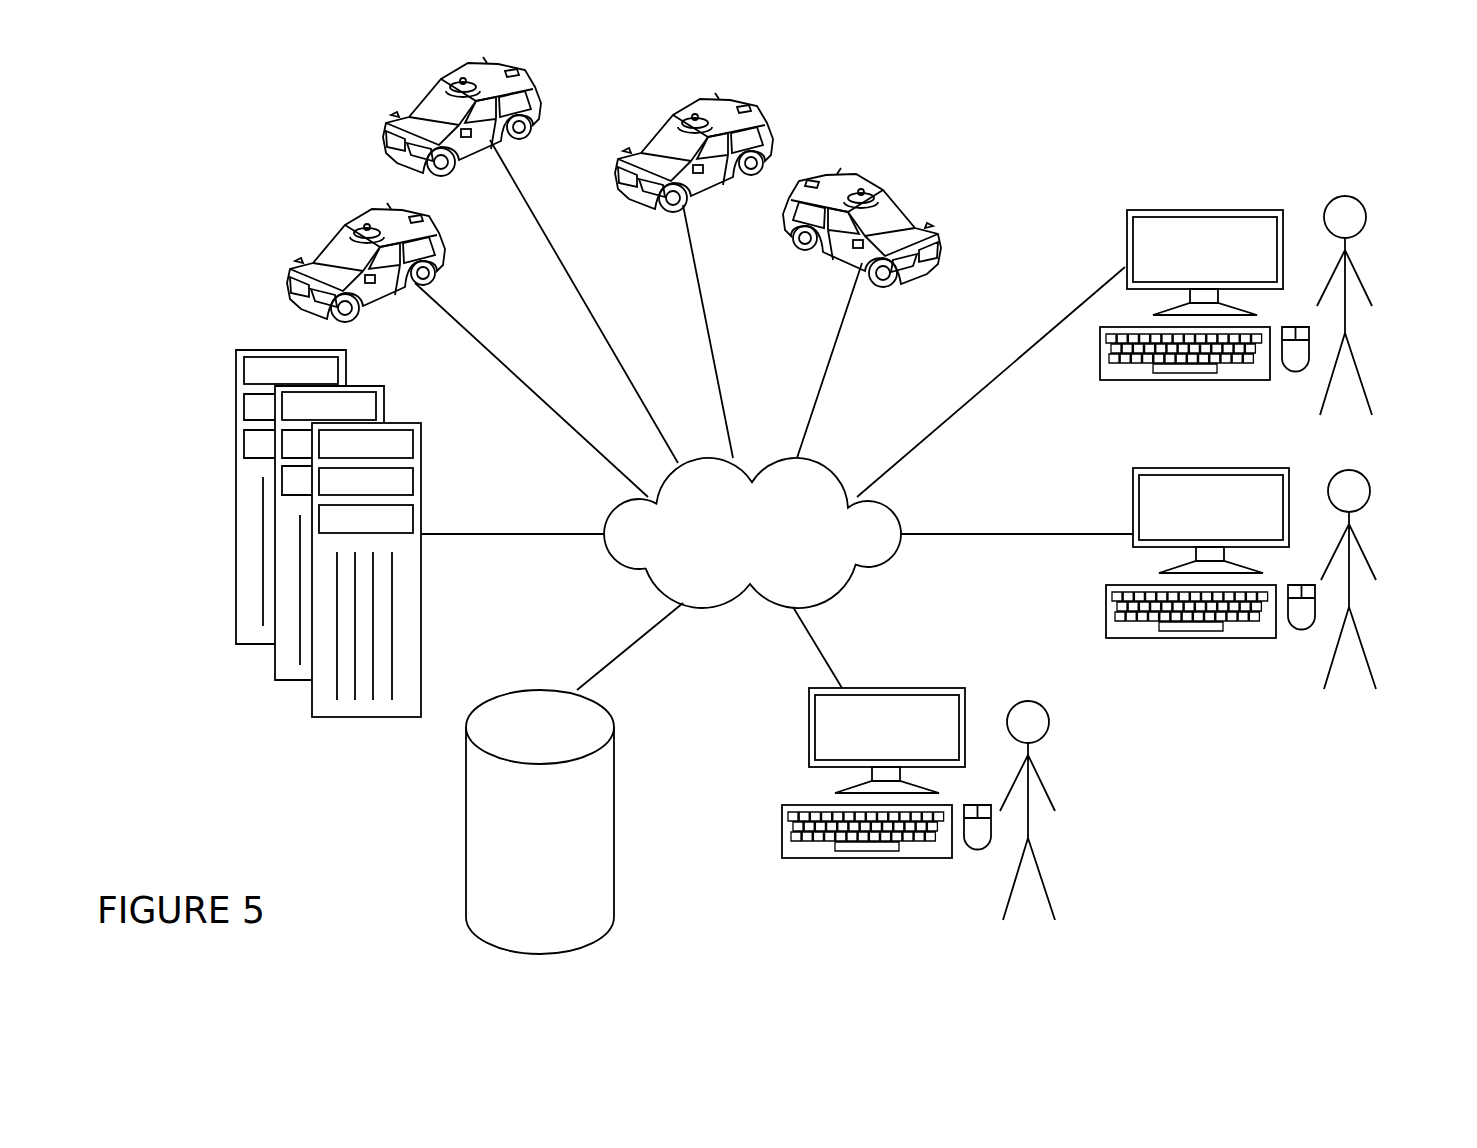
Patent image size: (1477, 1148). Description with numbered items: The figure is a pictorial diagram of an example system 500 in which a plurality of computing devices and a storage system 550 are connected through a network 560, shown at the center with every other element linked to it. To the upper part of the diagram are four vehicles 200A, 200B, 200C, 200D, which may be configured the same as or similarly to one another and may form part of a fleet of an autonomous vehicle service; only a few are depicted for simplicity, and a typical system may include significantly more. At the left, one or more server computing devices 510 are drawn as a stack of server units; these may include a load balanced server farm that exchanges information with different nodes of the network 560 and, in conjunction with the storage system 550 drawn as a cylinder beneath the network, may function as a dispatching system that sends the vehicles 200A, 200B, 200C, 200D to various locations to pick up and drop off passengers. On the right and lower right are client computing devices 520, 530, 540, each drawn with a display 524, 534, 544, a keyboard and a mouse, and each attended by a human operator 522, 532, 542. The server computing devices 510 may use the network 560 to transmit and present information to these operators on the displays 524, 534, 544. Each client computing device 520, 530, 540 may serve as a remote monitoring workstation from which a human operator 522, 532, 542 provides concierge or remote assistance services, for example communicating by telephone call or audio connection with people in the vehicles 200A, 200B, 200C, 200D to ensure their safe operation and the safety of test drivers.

The system 500 is at (200, 866).
The vehicle 200A is at (290, 293).
The vehicle 200B is at (384, 146).
The vehicle 200C is at (770, 137).
The vehicle 200D is at (940, 246).
The server computing devices 510 is at (421, 468).
The client computing device 520 is at (1188, 296).
The human operator 522 is at (1347, 318).
The display 524 is at (1220, 240).
The client computing device 530 is at (1175, 526).
The human operator 532 is at (1352, 590).
The display 534 is at (1229, 480).
The remote monitoring workstation 540 is at (911, 736).
The human operator 542 is at (1030, 820).
The display 544 is at (924, 703).
The storage system 550 is at (614, 830).
The network 560 is at (617, 565).